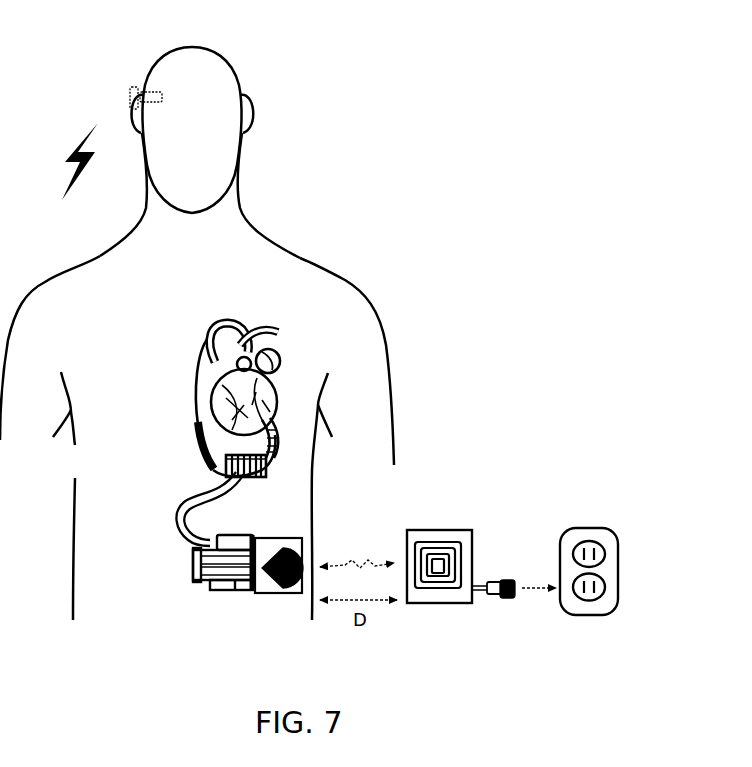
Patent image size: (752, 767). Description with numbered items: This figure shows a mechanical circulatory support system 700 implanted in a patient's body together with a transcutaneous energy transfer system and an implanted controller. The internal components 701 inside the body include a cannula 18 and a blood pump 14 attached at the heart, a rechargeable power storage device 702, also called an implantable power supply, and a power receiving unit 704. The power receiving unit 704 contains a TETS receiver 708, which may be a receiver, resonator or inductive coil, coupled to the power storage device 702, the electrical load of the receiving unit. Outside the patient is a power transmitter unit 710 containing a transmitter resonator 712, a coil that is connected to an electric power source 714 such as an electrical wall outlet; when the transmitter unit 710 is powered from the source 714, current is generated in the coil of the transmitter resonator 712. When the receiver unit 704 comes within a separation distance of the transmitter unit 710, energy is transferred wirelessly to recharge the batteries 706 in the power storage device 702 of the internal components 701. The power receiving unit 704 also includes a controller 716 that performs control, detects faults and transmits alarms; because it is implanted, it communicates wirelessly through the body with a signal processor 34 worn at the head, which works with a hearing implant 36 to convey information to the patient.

The blood pump 14 is at (258, 476).
The cannula 18 is at (198, 440).
The signal processor 34 is at (132, 87).
The hearing implant 36 is at (161, 92).
The mechanical circulatory support system 700 is at (449, 322).
The internal components 701 is at (176, 465).
The rechargeable power storage device 702 is at (212, 589).
The power receiving unit 704 is at (270, 595).
The batteries 706 is at (194, 578).
The TETS receiver 708 is at (300, 534).
The power transmitter unit 710 is at (458, 530).
The transmitter resonator 712 is at (433, 528).
The electric power source 714 is at (591, 526).
The controller 716 is at (278, 597).